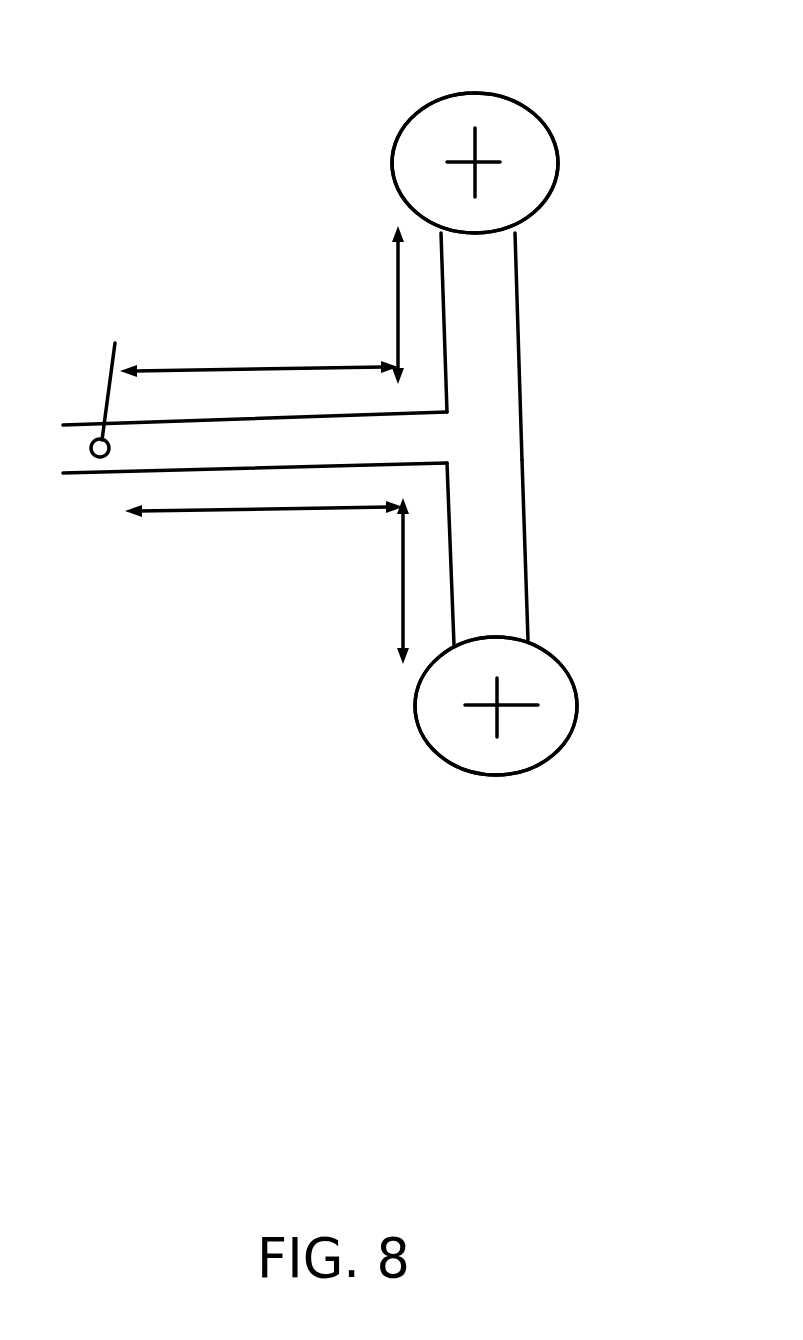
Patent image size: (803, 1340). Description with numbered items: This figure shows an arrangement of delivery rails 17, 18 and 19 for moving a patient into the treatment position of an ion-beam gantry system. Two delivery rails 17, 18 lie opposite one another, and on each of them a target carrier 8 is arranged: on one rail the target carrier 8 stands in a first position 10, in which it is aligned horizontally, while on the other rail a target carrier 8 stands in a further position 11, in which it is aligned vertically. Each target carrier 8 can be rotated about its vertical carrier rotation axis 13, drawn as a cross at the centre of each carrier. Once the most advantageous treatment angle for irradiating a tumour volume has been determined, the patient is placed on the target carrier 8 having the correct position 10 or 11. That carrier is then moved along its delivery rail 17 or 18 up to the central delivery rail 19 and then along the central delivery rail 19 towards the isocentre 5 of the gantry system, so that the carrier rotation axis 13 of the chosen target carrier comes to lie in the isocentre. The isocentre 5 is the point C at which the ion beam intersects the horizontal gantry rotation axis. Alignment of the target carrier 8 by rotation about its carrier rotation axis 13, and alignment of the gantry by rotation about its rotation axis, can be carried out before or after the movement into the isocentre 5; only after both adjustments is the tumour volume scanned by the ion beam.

The isocentre 5 is at (92, 458).
The target carrier 8 is at (522, 183).
The first position 10 is at (510, 125).
The further position 11 is at (543, 672).
The carrier rotation axis 13 is at (470, 152).
The delivery rail 17 is at (483, 340).
The delivery rail 18 is at (498, 560).
The central delivery rail 19 is at (237, 448).
The point C is at (118, 359).